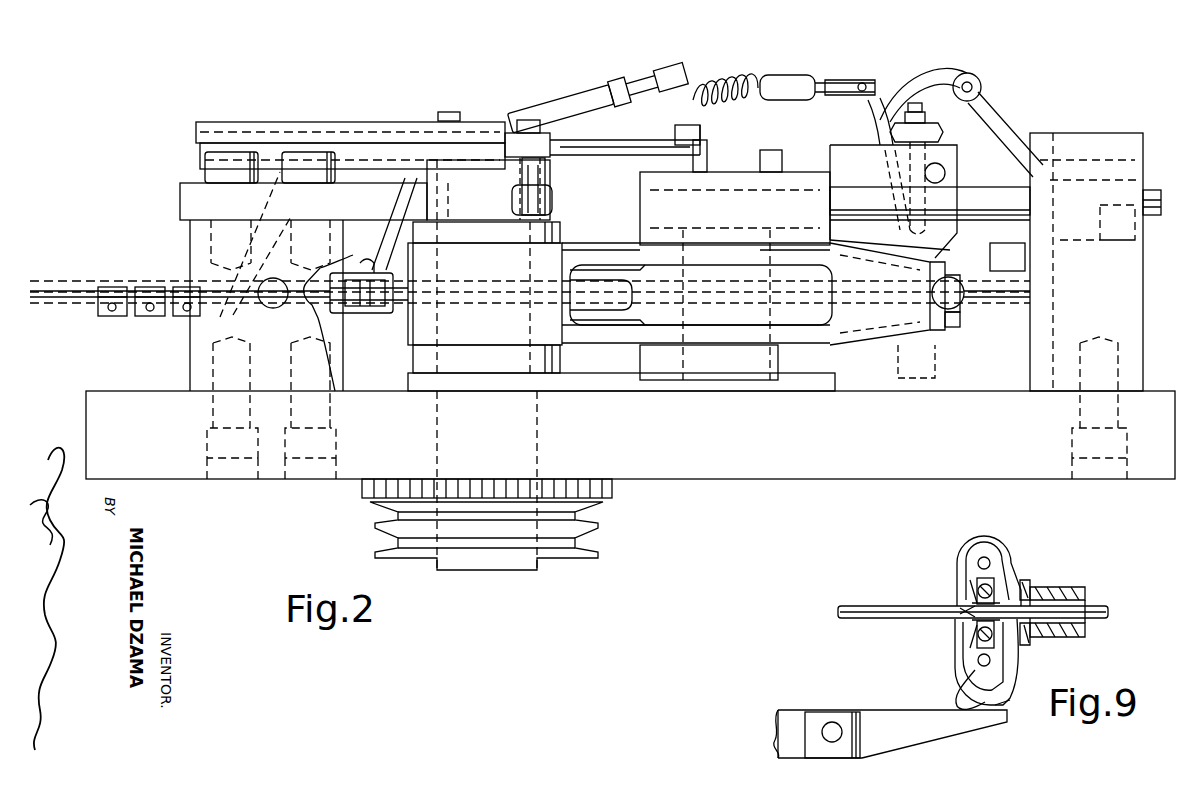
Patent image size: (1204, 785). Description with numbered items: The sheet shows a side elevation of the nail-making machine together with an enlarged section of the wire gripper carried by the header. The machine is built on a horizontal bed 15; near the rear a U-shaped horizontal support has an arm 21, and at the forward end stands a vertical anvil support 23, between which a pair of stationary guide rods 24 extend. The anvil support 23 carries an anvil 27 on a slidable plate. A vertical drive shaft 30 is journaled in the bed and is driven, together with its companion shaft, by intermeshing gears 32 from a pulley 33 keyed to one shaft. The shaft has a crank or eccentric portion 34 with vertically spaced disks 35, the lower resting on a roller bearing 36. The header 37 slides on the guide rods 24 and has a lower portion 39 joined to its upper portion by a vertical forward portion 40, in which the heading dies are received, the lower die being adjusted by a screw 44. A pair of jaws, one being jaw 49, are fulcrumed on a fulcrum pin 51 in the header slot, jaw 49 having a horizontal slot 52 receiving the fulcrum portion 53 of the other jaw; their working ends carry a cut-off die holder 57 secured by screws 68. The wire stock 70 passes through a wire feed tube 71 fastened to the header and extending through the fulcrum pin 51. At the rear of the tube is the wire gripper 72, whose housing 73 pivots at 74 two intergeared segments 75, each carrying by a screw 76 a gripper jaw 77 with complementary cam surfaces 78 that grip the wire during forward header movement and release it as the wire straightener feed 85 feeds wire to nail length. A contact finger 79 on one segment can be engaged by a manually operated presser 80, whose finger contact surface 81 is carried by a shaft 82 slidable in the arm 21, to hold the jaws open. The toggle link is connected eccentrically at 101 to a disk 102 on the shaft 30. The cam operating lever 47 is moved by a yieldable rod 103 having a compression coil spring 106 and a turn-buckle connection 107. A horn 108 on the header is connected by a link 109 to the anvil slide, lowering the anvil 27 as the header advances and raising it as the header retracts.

In FIG. 2, the horizontal bed 15 is at (738, 468).
In FIG. 2, the arm of U-shaped horizontal support 21 is at (190, 195).
In FIG. 2, the vertical anvil support 23 is at (1100, 150).
In FIG. 2, the stationary guide rods 24 is at (980, 186).
In FIG. 2, the anvil 27 is at (1003, 252).
In FIG. 2, the drive shaft 30 is at (447, 197).
In FIG. 2, the intermeshing gears 32 is at (612, 490).
In FIG. 2, the pulley 33 is at (600, 540).
In FIG. 2, the crank or eccentric portion 34 is at (447, 330).
In FIG. 2, the vertically spaced disks 35 is at (565, 360).
In FIG. 2, the roller bearing 36 is at (565, 383).
In FIG. 2, the header 37 is at (640, 228).
In FIG. 2, the lower portion of header 39 is at (843, 367).
In FIG. 2, the vertical forward portion of header 40 is at (893, 180).
In FIG. 2, the screw 44 is at (925, 375).
In FIG. 2, the operating lever 47 is at (868, 100).
In FIG. 2, the lever or jaw 49 is at (620, 337).
In FIG. 2, the fulcrum pin 51 is at (718, 382).
In FIG. 2, the horizontal slot 52 is at (668, 318).
In FIG. 2, the fulcrum portion 53 is at (788, 312).
In FIG. 2, the cut-off die holder 57 is at (962, 300).
In FIG. 2, the screws 68 is at (958, 322).
In FIG. 2, the wire stock 70 is at (60, 290).
In FIG. 9, the wire stock 70 is at (1108, 625).
In FIG. 2, the wire feed tube 71 is at (432, 280).
In FIG. 9, the wire feed tube 71 is at (1085, 590).
In FIG. 2, the wire gripper 72 is at (368, 313).
In FIG. 9, the wire gripper 72 is at (1017, 548).
In FIG. 9, the housing 73 is at (1005, 680).
In FIG. 9, the pivot 74 is at (975, 560).
In FIG. 9, the intergeared segments 75 is at (965, 592).
In FIG. 9, the screw 76 is at (995, 590).
In FIG. 9, the gripper jaw 77 is at (972, 603).
In FIG. 9, the cam surfaces 78 is at (955, 612).
In FIG. 9, the contact finger 79 is at (1003, 712).
In FIG. 9, the manually operated presser 80 is at (960, 722).
In FIG. 9, the finger contact surface 81 is at (842, 712).
In FIG. 9, the shaft 82 is at (862, 755).
In FIG. 2, the wire straightener feed 85 is at (149, 321).
In FIG. 2, the eccentric connection 101 is at (525, 130).
In FIG. 2, the disk 102 is at (548, 178).
In FIG. 2, the yieldable rod 103 is at (793, 80).
In FIG. 2, the compression coil spring 106 is at (722, 85).
In FIG. 2, the turn-buckle connection 107 is at (628, 108).
In FIG. 2, the horn 108 is at (950, 68).
In FIG. 2, the link 109 is at (1003, 110).